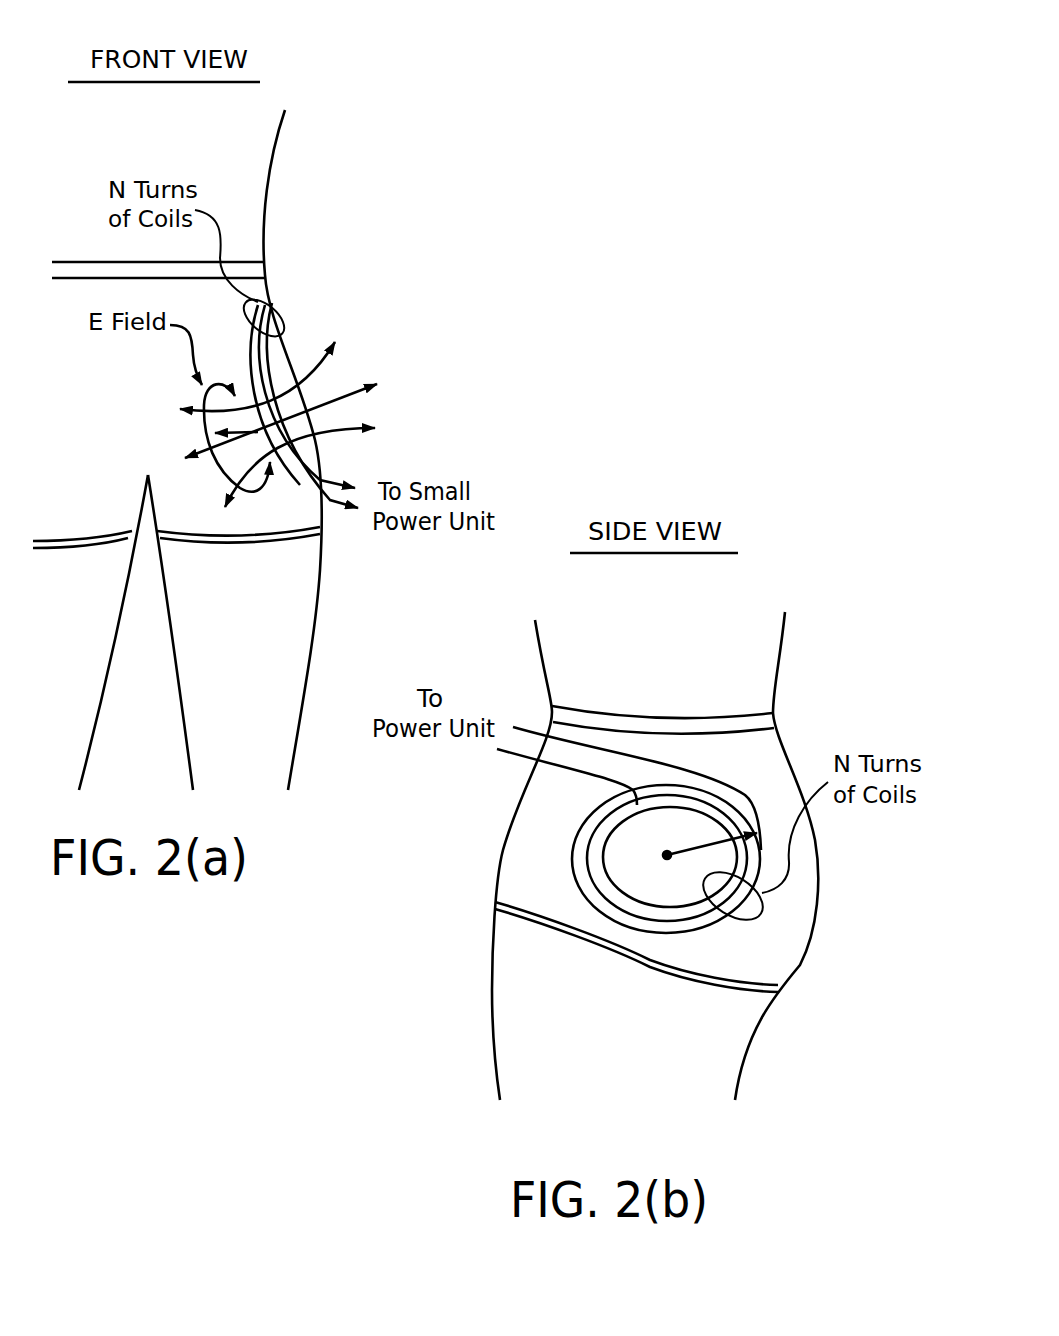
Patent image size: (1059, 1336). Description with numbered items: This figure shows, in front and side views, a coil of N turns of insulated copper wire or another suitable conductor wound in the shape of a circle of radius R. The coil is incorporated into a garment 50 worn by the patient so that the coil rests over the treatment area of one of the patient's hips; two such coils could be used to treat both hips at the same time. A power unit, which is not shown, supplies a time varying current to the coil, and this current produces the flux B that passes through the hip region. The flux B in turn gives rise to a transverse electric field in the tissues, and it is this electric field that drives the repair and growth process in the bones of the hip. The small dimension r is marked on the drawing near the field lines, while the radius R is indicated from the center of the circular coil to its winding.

The garment 50 is at (532, 862).
The flux B is at (278, 422).
The radius R is at (710, 842).
The field line radius r is at (236, 421).